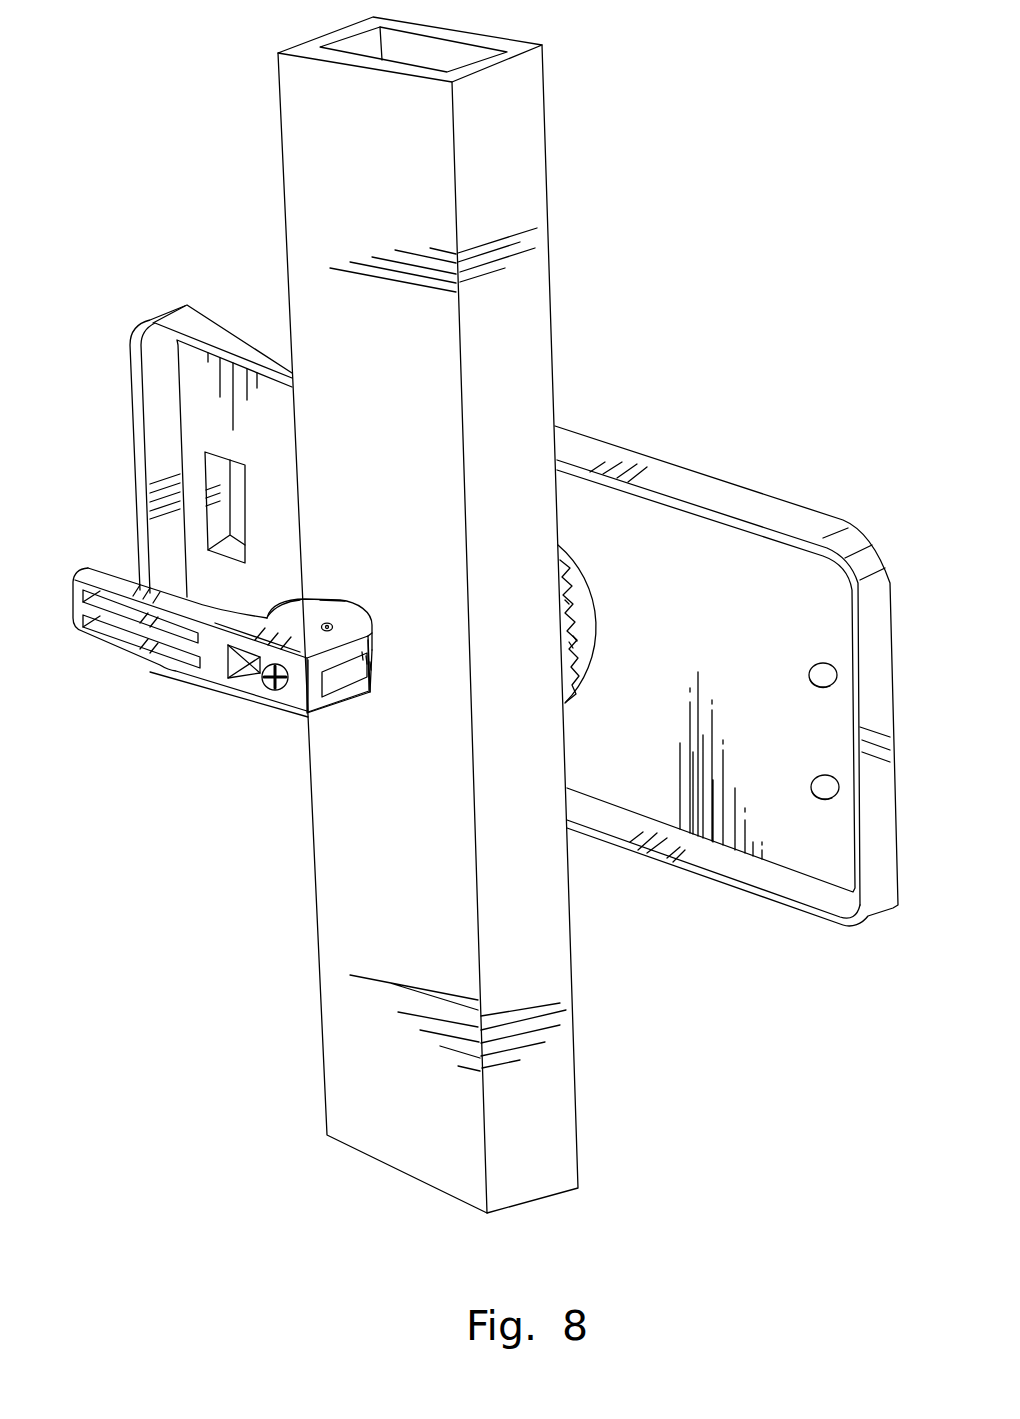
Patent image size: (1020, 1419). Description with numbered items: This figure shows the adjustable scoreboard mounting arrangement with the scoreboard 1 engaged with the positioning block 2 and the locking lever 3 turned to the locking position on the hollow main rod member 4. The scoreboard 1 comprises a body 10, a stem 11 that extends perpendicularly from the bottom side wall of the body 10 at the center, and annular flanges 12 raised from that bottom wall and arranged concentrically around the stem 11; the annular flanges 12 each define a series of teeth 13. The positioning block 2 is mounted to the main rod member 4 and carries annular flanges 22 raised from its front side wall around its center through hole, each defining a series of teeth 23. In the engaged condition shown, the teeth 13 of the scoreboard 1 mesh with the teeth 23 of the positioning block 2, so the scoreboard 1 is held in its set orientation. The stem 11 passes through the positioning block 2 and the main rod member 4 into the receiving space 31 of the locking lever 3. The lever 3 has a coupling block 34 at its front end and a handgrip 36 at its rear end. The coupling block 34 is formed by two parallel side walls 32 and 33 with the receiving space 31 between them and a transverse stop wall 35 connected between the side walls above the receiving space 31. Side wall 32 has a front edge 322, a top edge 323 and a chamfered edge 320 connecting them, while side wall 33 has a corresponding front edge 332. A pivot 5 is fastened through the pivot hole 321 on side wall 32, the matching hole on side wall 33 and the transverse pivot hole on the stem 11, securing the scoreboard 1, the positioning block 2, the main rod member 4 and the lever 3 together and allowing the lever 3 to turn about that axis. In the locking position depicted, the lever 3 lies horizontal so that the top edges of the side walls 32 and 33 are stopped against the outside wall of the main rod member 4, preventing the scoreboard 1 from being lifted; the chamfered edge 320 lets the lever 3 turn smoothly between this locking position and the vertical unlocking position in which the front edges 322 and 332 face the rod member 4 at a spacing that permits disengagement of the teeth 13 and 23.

The scoreboard 1 is at (733, 468).
The body 10 is at (728, 526).
The annular flanges 12 is at (568, 600).
The teeth 13 is at (568, 600).
The positioning block 2 is at (548, 620).
The annular flanges 22 is at (570, 643).
The teeth 23 is at (573, 638).
The locking lever 3 is at (93, 555).
The handgrip 36 is at (113, 643).
The stem 11 is at (263, 681).
The side wall 32 is at (320, 598).
The chamfered edge 320 is at (372, 628).
The pivot hole 321 is at (302, 603).
The front edge 322 is at (307, 657).
The top edge 323 is at (345, 602).
The transverse stop wall 35 is at (367, 650).
The receiving space 31 is at (369, 672).
The front edge 332 is at (330, 700).
The side wall 33 is at (357, 700).
The coupling block 34 is at (317, 690).
The pivot 5 is at (331, 631).
The hollow main rod member 4 is at (558, 311).